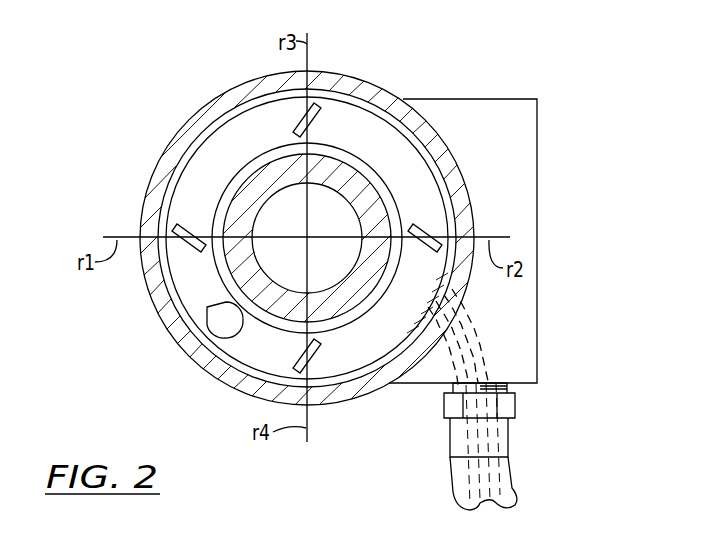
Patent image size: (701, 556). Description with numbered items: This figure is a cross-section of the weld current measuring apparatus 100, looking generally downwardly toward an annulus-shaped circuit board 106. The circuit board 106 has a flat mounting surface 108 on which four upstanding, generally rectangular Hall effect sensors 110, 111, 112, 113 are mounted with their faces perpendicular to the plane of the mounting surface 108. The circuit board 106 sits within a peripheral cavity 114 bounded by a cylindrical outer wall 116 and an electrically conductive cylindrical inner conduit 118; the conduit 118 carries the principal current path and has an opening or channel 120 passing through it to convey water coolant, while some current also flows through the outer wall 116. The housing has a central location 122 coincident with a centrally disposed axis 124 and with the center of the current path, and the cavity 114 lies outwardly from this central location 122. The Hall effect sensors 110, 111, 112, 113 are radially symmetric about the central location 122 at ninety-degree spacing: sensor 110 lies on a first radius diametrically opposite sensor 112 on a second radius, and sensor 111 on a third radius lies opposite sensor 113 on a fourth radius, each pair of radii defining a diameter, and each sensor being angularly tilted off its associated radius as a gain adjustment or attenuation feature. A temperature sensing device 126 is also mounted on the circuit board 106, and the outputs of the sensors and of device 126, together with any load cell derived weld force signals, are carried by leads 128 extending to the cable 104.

The apparatus 100 is at (123, 288).
The cable 104 is at (505, 488).
The circuit board 106 is at (368, 100).
The mounting surface 108 is at (260, 122).
The Hall effect sensor 110 is at (188, 222).
The Hall effect sensor 111 is at (319, 101).
The Hall effect sensor 112 is at (427, 224).
The Hall effect sensor 113 is at (320, 362).
The cavity 114 is at (198, 140).
The cylindrical outer wall 116 is at (392, 103).
The inner conduit 118 is at (350, 178).
The channel 120 is at (270, 265).
The central location 122 is at (428, 229).
The axis 124 is at (307, 238).
The temperature sensing device 126 is at (215, 323).
The leads 128 is at (490, 341).